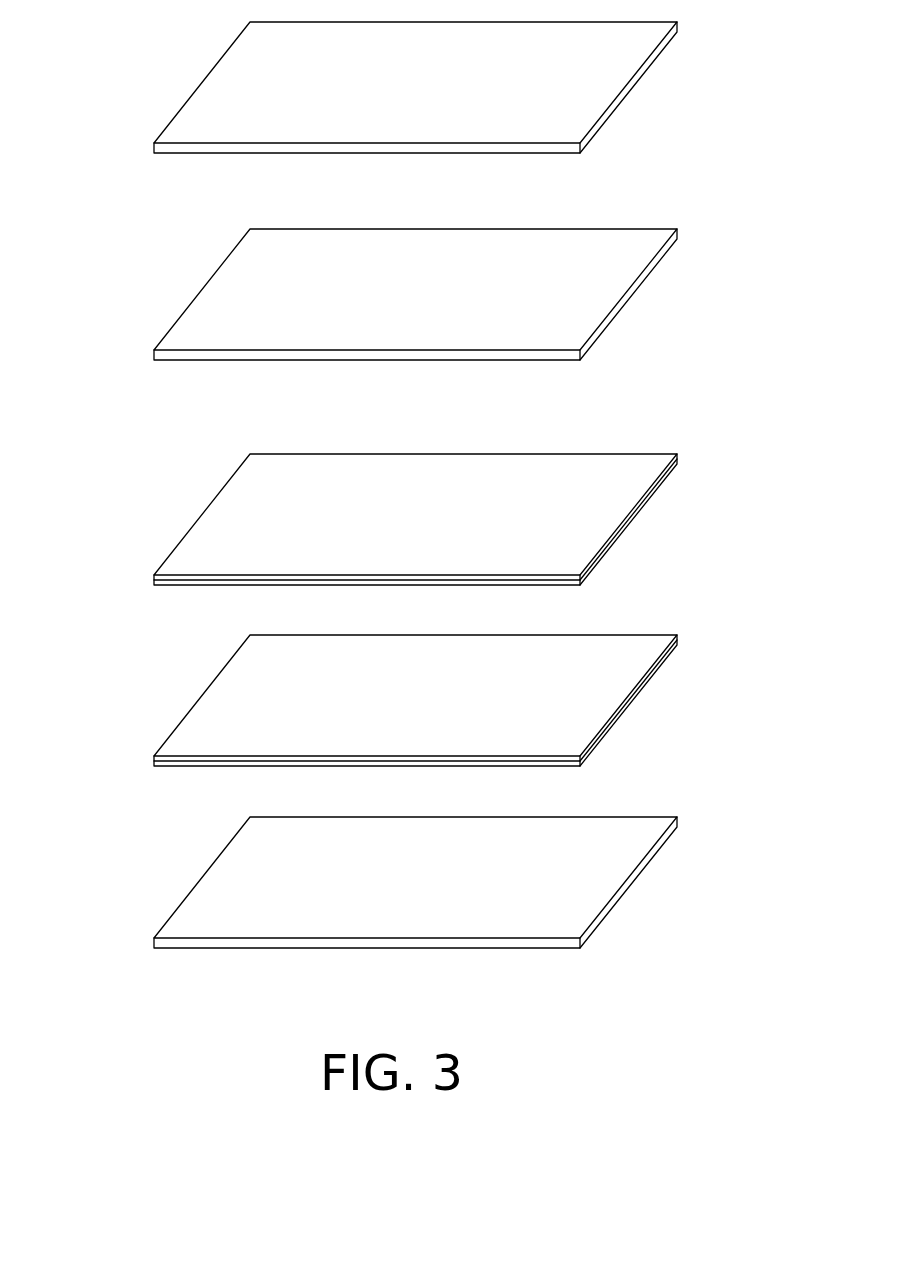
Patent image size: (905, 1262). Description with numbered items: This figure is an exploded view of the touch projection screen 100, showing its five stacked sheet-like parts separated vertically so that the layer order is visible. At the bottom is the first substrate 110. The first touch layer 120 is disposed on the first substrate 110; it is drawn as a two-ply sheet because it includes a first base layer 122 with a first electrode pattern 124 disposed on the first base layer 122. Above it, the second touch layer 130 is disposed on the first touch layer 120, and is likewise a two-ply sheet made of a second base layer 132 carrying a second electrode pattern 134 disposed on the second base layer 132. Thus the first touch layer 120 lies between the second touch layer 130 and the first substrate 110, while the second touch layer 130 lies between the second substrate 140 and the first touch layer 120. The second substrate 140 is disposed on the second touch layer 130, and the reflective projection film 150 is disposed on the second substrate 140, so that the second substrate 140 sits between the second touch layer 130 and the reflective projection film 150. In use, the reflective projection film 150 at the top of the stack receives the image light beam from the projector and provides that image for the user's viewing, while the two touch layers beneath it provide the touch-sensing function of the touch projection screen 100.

The touch projection screen 100 is at (393, 504).
The first substrate 110 is at (198, 925).
The first touch layer 120 is at (342, 724).
The first base layer 122 is at (185, 765).
The first electrode pattern 124 is at (178, 758).
The second touch layer 130 is at (342, 544).
The second base layer 132 is at (178, 583).
The second electrode pattern 134 is at (190, 577).
The second substrate 140 is at (198, 337).
The reflective projection film 150 is at (198, 128).